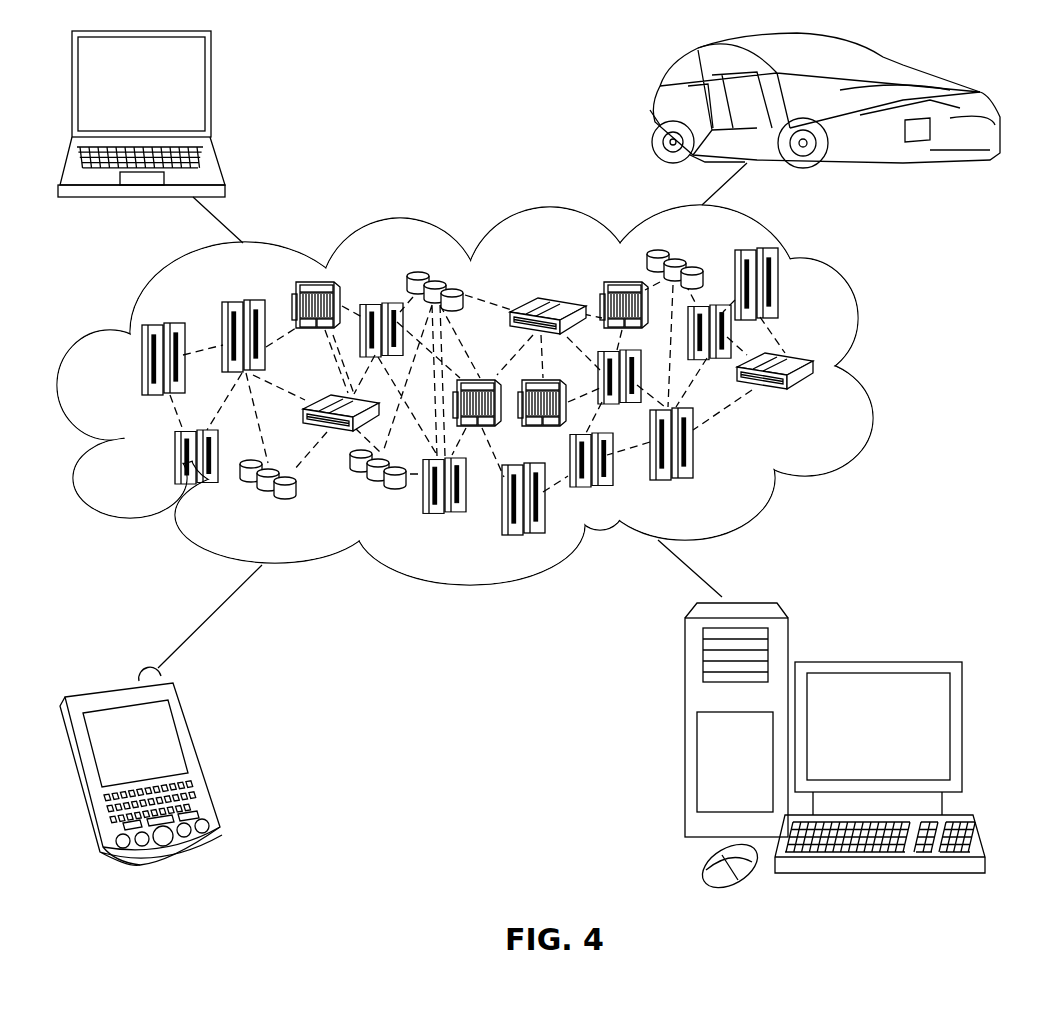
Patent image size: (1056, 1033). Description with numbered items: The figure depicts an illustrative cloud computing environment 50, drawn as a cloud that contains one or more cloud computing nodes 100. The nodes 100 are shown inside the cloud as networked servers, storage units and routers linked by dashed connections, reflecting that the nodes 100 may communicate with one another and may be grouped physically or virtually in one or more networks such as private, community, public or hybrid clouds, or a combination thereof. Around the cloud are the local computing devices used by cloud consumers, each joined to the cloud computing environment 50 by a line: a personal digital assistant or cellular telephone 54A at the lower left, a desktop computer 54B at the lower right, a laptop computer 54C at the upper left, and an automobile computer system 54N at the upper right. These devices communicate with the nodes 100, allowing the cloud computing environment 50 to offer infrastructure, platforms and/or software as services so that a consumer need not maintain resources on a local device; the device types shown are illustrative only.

The cloud computing environment 50 is at (875, 370).
The cloud computing nodes 100 is at (815, 397).
The personal digital assistant (PDA) or cellular telephone 54A is at (200, 757).
The desktop computer 54B is at (873, 661).
The laptop computer 54C is at (211, 92).
The automobile computer system 54N is at (653, 109).